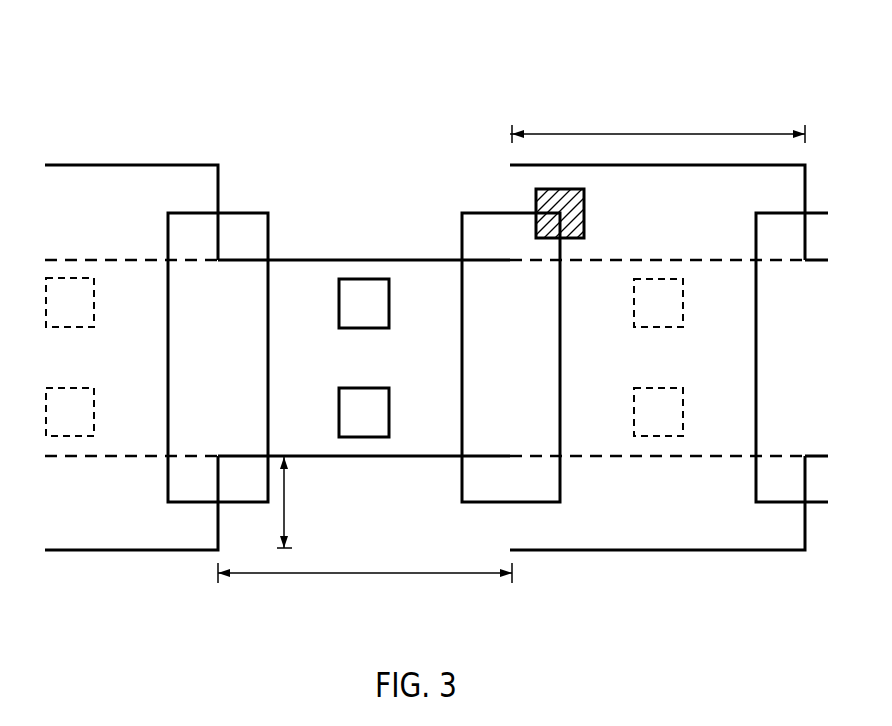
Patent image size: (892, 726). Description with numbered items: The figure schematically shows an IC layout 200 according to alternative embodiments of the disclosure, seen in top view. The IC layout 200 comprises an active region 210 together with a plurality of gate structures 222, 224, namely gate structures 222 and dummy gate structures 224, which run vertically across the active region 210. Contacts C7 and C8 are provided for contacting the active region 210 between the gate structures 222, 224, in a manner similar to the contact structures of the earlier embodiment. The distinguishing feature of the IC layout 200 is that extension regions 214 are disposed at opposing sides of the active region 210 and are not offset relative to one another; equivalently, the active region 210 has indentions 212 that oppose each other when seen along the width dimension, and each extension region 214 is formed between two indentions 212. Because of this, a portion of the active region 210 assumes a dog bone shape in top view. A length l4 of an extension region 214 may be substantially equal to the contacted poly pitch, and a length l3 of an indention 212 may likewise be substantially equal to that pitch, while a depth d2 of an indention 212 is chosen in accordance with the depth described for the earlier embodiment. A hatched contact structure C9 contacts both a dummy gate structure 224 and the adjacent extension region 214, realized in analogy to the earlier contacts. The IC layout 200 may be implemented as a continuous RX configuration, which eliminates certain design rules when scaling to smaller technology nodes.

The IC layout 200 is at (829, 52).
The active region 210 is at (387, 372).
The indention 212 is at (386, 205).
The extension region 214 is at (90, 205).
The gate structure 222 is at (236, 374).
The dummy gate structure 224 is at (532, 372).
The contact C7 is at (390, 303).
The contact C8 is at (95, 302).
The contact structure C9 is at (585, 226).
The depth of indention d2 is at (286, 502).
The length of indention l3 is at (365, 575).
The length of extension region l4 is at (659, 133).